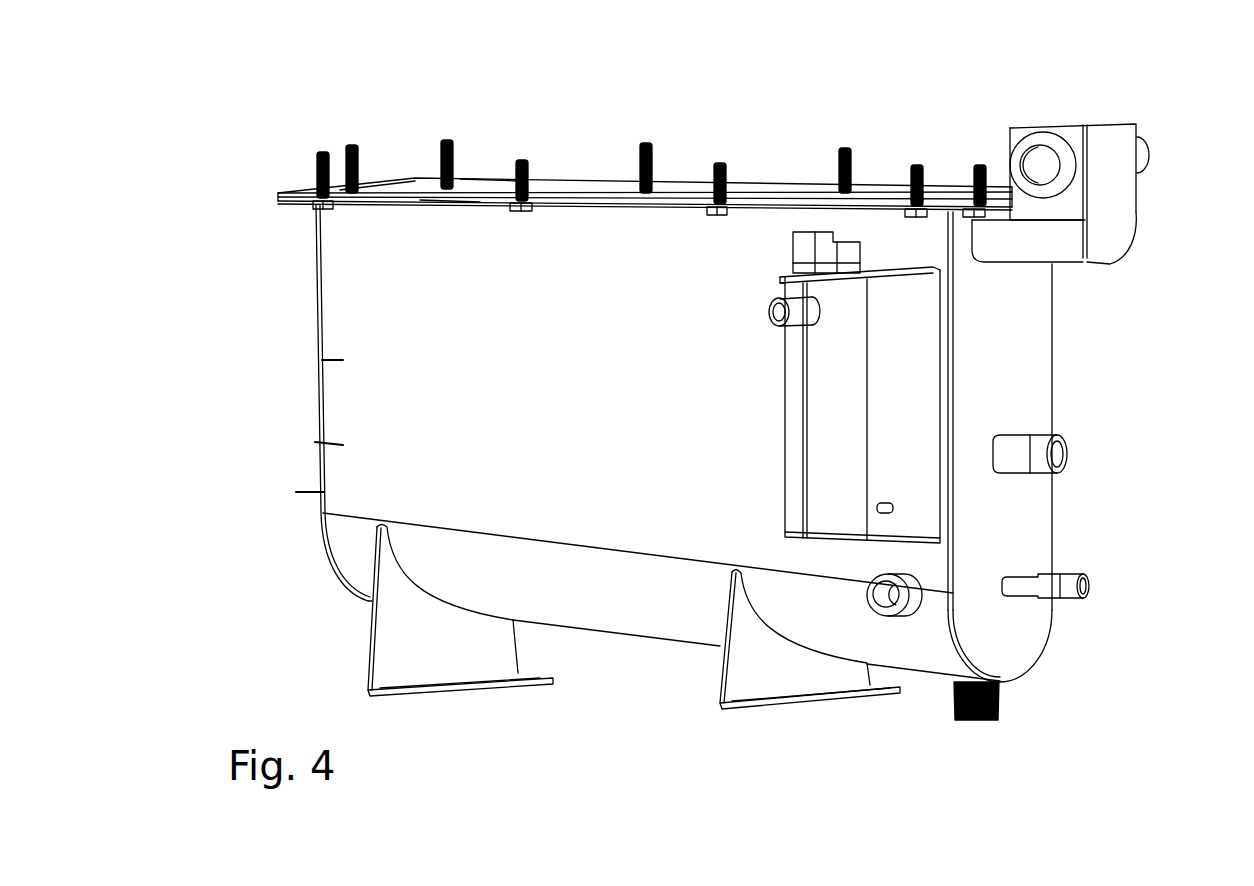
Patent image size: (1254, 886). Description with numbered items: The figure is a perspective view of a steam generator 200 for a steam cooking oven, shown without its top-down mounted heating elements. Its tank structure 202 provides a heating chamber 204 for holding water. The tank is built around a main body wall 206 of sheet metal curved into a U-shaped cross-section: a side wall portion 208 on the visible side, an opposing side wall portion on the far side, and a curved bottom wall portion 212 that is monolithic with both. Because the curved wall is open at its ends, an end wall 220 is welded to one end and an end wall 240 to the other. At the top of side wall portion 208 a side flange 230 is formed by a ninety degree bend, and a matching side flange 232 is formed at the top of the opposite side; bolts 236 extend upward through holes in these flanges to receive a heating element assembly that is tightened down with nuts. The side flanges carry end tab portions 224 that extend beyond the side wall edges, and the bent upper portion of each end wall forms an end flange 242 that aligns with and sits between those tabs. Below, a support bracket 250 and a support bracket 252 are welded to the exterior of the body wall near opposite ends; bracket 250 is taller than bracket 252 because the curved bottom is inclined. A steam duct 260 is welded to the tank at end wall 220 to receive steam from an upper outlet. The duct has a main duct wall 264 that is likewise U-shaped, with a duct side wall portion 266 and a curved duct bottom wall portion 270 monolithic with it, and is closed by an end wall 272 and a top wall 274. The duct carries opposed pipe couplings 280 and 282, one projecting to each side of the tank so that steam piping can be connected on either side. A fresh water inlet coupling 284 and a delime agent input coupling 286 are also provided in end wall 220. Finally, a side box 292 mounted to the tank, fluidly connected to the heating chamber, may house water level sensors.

The steam generator 200 is at (942, 97).
The tank structure 202 is at (320, 287).
The heating chamber 204 is at (595, 195).
The main body wall 206 is at (315, 442).
The side wall portion 208 is at (322, 360).
The curved bottom wall portion 212 is at (657, 615).
The end wall 220 is at (1027, 355).
The end tab portions 224 is at (278, 195).
The side flange 230 is at (450, 200).
The side flange 232 is at (487, 178).
The bolts 236 is at (316, 168).
The end wall 240 is at (296, 492).
The end flange 242 is at (372, 180).
The support bracket 250 is at (380, 627).
The support bracket 252 is at (743, 663).
The steam duct 260 is at (1128, 116).
The main duct wall 264 is at (1068, 213).
The duct side wall portion 266 is at (1057, 205).
The curved duct bottom wall portion 270 is at (1073, 256).
The end wall 272 is at (1110, 247).
The top wall 274 is at (1075, 127).
The pipe coupling 280 is at (1018, 156).
The pipe coupling 282 is at (1142, 142).
The fresh water inlet coupling 284 is at (1038, 573).
The delime agent input coupling 286 is at (1033, 443).
The side box 292 is at (784, 347).